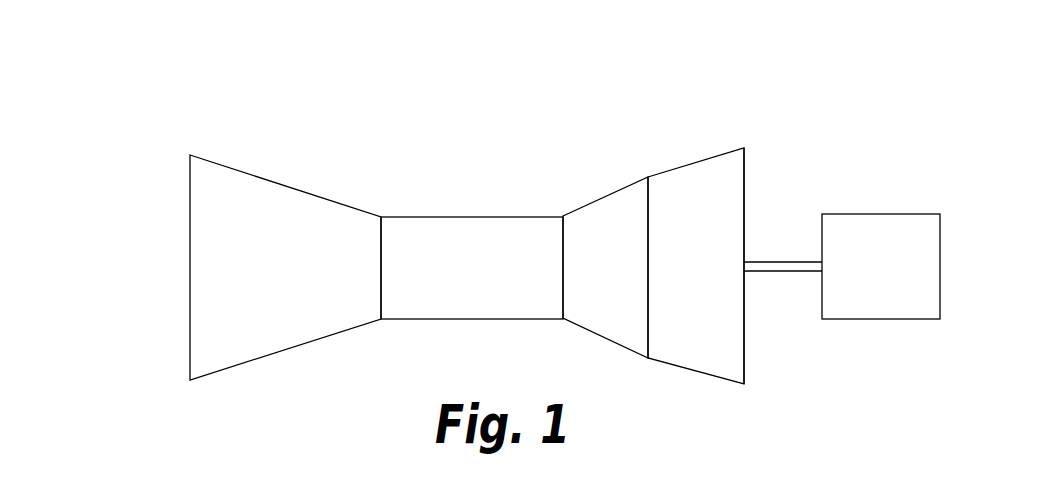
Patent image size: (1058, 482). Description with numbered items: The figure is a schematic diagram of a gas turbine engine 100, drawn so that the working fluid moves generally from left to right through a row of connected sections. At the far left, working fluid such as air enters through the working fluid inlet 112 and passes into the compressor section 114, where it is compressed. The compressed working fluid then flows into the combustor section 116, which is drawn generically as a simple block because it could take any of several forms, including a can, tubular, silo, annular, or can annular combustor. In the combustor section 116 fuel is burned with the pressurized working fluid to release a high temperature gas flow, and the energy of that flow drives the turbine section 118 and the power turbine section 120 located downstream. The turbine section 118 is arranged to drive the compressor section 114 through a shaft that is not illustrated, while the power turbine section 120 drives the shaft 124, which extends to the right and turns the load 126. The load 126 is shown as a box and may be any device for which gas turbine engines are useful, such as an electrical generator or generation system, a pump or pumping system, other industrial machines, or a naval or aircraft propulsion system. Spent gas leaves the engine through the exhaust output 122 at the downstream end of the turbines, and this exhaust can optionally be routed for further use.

The gas turbine engine 100 is at (771, 76).
The working fluid inlet 112 is at (176, 265).
The compressor section 114 is at (267, 188).
The combustor section 116 is at (458, 233).
The turbine section 118 is at (600, 208).
The power turbine section 120 is at (692, 175).
The exhaust output 122 is at (750, 363).
The shaft 124 is at (768, 258).
The load 126 is at (885, 238).